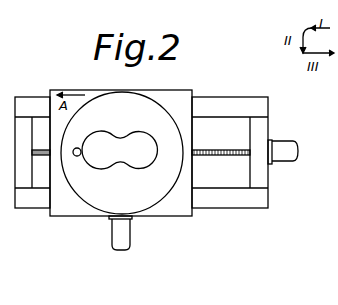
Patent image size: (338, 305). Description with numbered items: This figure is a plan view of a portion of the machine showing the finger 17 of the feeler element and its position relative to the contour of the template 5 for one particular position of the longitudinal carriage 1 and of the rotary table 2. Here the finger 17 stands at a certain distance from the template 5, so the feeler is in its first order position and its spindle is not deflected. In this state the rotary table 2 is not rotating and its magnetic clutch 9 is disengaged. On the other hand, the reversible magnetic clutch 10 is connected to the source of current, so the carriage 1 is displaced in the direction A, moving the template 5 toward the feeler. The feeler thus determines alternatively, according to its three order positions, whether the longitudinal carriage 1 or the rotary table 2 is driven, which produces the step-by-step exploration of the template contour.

The longitudinal carriage 1 is at (173, 91).
The rotary table 2 is at (160, 116).
The template 5 is at (108, 165).
The magnetic clutch 9 is at (121, 251).
The reversible magnetic clutch 10 is at (297, 153).
The finger of the feeler element 17 is at (78, 148).